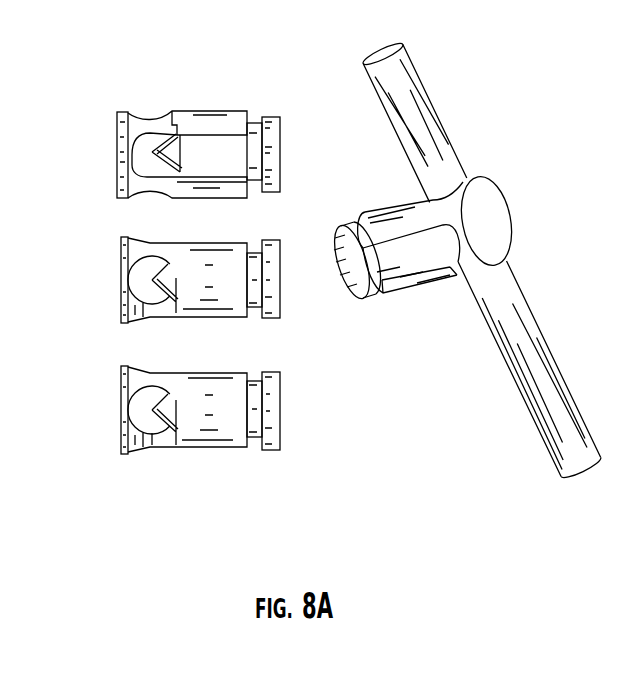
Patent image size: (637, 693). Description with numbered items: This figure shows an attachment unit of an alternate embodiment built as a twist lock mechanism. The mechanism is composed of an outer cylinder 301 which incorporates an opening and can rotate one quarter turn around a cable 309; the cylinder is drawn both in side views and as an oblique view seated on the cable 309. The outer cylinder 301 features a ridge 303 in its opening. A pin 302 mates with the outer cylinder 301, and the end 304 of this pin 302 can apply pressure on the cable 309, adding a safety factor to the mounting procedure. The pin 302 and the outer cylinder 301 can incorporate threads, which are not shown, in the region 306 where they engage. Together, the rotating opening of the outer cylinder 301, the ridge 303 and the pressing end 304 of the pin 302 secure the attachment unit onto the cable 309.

The outer cylinder 301 is at (117, 152).
The pin 302 is at (273, 405).
The ridge 303 is at (202, 410).
The end of pin 304 is at (128, 282).
The region 306 is at (413, 253).
The cable 309 is at (383, 56).